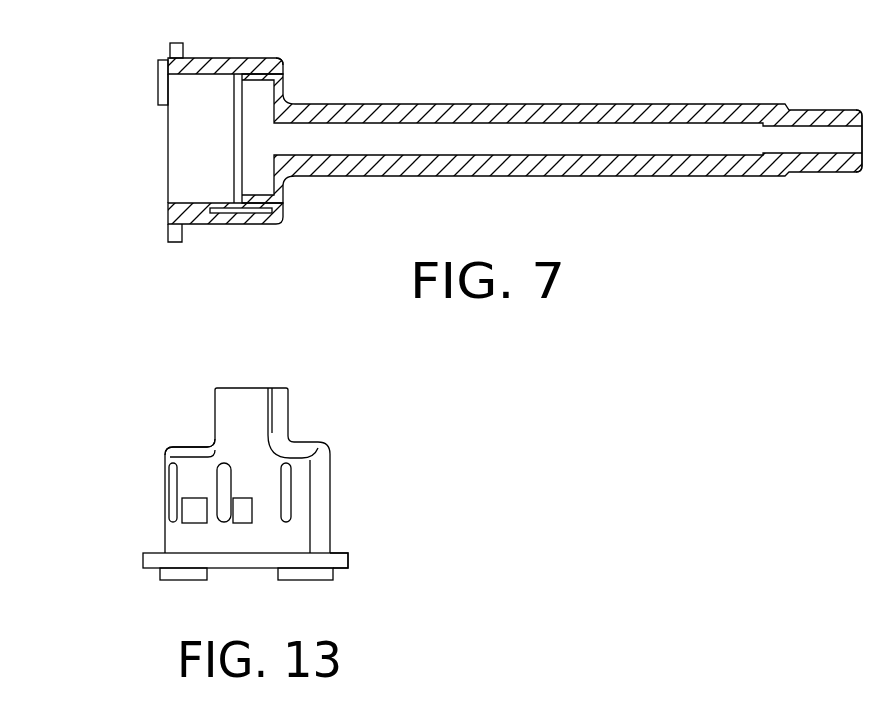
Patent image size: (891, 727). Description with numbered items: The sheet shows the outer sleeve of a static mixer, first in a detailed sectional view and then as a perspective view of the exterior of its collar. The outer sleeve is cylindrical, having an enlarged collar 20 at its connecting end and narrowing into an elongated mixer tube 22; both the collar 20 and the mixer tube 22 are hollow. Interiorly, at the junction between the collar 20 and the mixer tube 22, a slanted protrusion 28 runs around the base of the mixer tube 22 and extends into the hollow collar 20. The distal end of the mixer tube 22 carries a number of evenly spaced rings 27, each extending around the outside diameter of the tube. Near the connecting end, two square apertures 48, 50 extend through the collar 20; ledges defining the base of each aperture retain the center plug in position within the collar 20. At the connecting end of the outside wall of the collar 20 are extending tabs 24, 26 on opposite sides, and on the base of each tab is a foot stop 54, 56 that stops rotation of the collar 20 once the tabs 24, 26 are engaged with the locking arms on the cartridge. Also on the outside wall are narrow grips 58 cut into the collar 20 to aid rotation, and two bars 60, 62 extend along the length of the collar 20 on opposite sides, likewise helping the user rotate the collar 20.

In FIG. 7, the collar 20 is at (232, 226).
In FIG. 13, the collar 20 is at (288, 535).
In FIG. 7, the mixer tube 22 is at (537, 104).
In FIG. 7, the extending tab 24 is at (183, 40).
In FIG. 13, the extending tab 24 is at (143, 558).
In FIG. 7, the extending tab 26 is at (168, 243).
In FIG. 13, the extending tab 26 is at (350, 561).
In FIG. 7, the rings 27 is at (835, 108).
In FIG. 7, the slanted protrusion 28 is at (275, 173).
In FIG. 13, the square aperture 48 is at (195, 511).
In FIG. 13, the square aperture 50 is at (240, 520).
In FIG. 13, the foot stop 54 is at (165, 577).
In FIG. 13, the foot stop 56 is at (308, 582).
In FIG. 7, the narrow grips 58 is at (268, 60).
In FIG. 13, the narrow grips 58 is at (290, 470).
In FIG. 13, the bar 60 is at (192, 455).
In FIG. 13, the bar 62 is at (292, 448).